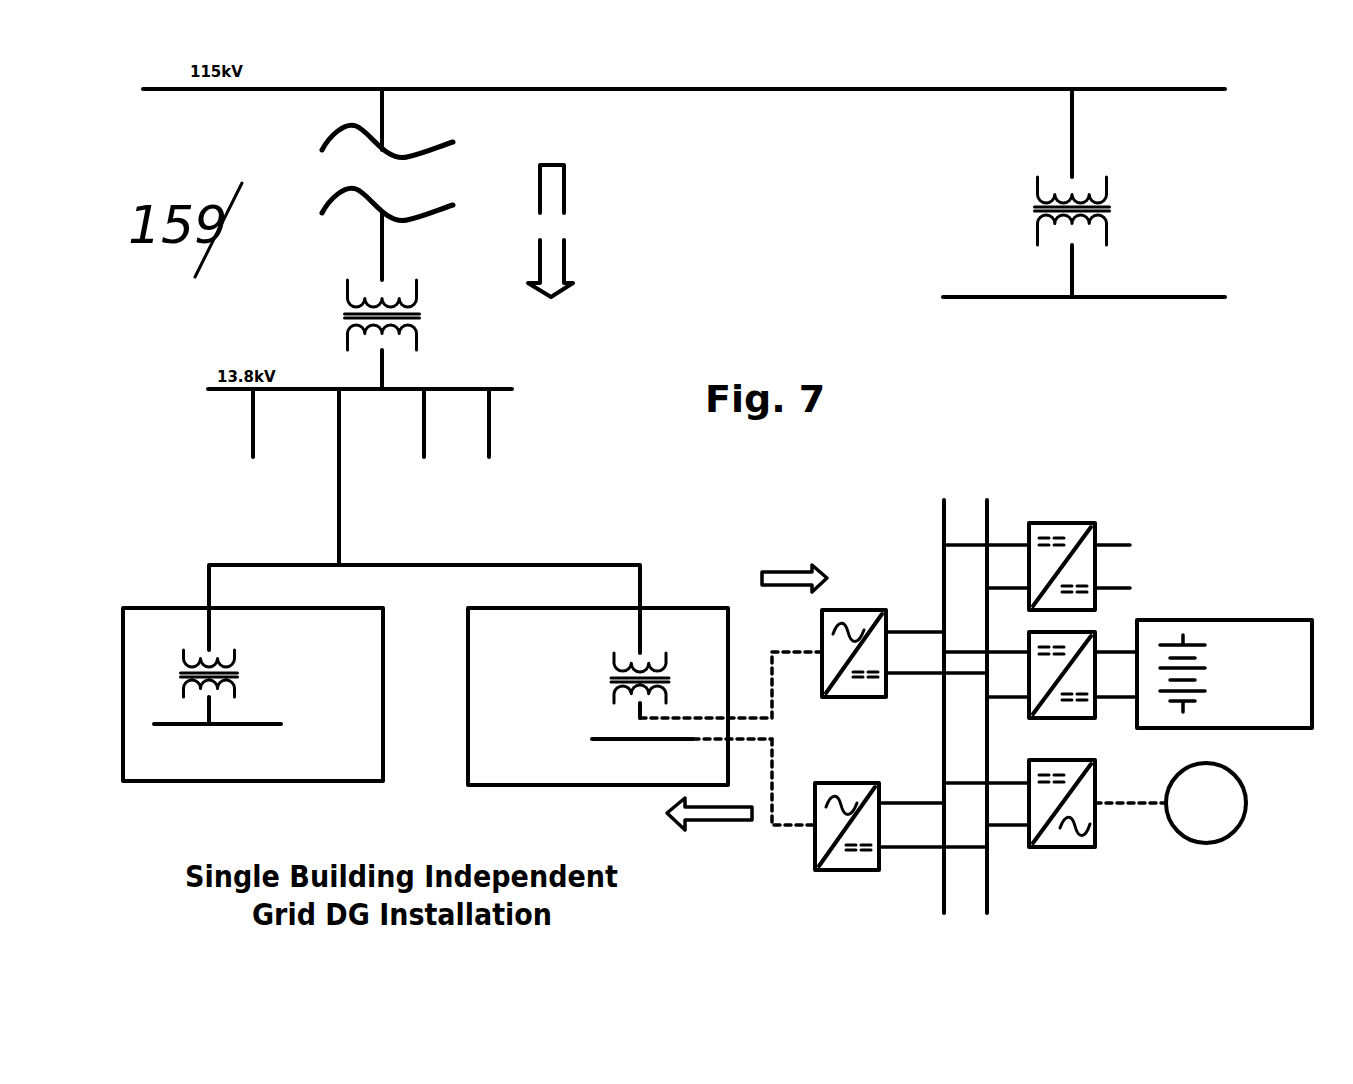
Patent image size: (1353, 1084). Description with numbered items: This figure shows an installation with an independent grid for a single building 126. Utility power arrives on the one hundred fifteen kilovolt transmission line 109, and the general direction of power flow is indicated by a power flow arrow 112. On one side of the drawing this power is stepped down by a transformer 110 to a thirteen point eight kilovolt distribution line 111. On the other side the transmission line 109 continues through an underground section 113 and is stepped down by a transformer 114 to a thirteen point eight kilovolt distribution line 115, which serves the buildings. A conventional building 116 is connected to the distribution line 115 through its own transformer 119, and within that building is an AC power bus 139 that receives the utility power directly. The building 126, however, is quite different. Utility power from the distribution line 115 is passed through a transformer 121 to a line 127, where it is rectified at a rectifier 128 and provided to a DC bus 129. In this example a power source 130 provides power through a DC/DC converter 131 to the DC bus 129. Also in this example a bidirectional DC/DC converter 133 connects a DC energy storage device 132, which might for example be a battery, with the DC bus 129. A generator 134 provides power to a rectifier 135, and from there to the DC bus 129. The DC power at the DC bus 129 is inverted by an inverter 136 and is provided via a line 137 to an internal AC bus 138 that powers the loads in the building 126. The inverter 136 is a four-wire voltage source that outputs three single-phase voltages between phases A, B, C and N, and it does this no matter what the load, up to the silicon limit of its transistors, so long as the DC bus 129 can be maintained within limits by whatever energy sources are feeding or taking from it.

The transmission line 109 is at (684, 123).
The transformer 110 is at (1107, 193).
The distribution line 111 is at (1085, 275).
The power flow arrow 112 is at (585, 231).
The underground transmission line 113 is at (402, 184).
The transformer 114 is at (345, 334).
The distribution line 115 is at (424, 490).
The building 116 is at (253, 645).
The transformer 119 is at (156, 672).
The AC power bus 139 is at (176, 710).
The building 126 is at (598, 644).
The transformer 121 is at (598, 673).
The internal AC bus 138 is at (640, 721).
The line 127 is at (746, 626).
The line 137 is at (744, 810).
The rectifier 128 is at (904, 609).
The DC bus 129 is at (962, 648).
The DC/DC converter 131 is at (1064, 534).
The power source 130 is at (1219, 535).
The bidirectional DC/DC converter 133 is at (1042, 689).
The DC energy storage device 132 is at (1224, 700).
The rectifier 135 is at (1055, 827).
The generator 134 is at (1215, 843).
The inverter 136 is at (901, 858).